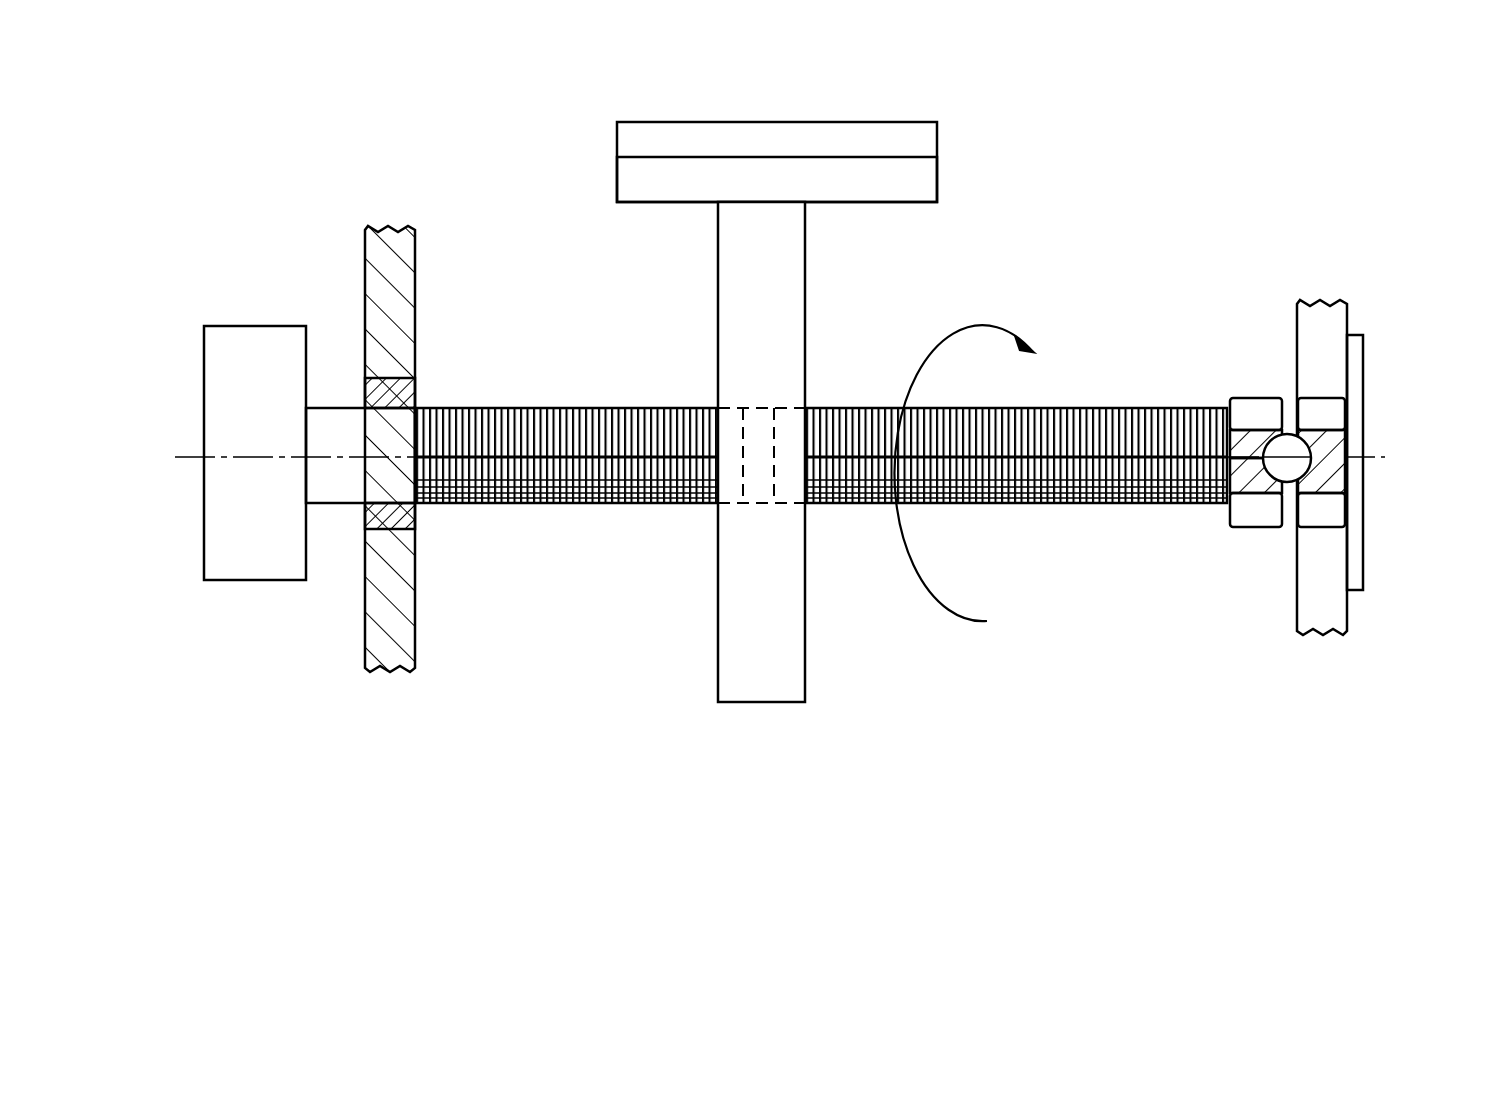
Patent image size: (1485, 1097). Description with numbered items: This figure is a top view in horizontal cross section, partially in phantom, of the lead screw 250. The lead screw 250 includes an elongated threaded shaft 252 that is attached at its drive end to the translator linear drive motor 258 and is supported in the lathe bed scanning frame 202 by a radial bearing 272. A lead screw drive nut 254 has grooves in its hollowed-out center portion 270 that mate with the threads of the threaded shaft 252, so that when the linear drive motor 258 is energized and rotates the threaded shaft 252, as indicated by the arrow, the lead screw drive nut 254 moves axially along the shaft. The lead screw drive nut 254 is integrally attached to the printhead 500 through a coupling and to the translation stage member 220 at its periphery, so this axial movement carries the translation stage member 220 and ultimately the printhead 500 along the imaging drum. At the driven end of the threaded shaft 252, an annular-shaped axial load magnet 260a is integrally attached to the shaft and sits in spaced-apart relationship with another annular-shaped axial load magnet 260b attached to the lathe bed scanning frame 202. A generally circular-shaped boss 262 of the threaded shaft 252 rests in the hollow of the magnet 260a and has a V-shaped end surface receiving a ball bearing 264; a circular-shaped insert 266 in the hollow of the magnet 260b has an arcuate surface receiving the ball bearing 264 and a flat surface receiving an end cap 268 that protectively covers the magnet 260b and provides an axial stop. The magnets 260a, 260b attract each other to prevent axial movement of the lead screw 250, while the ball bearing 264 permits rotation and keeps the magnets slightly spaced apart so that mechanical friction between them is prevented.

The lead screw 250 is at (796, 77).
The printhead 500 is at (617, 128).
The translation stage member 220 is at (617, 168).
The translator linear drive motor 258 is at (252, 326).
The lathe bed scanning frame 202 is at (363, 617).
The radial bearing 272 is at (417, 392).
The threaded shaft 252 is at (510, 508).
The lead screw drive nut 254 is at (714, 461).
The hollowed-out center portion 270 is at (741, 501).
The annular-shaped axial load magnet 260a is at (1254, 398).
The annular-shaped axial load magnet 260b is at (1295, 515).
The circular-shaped boss 262 is at (1238, 428).
The ball bearing 264 is at (1235, 496).
The circular-shaped insert 266 is at (1342, 489).
The end cap 268 is at (1362, 368).